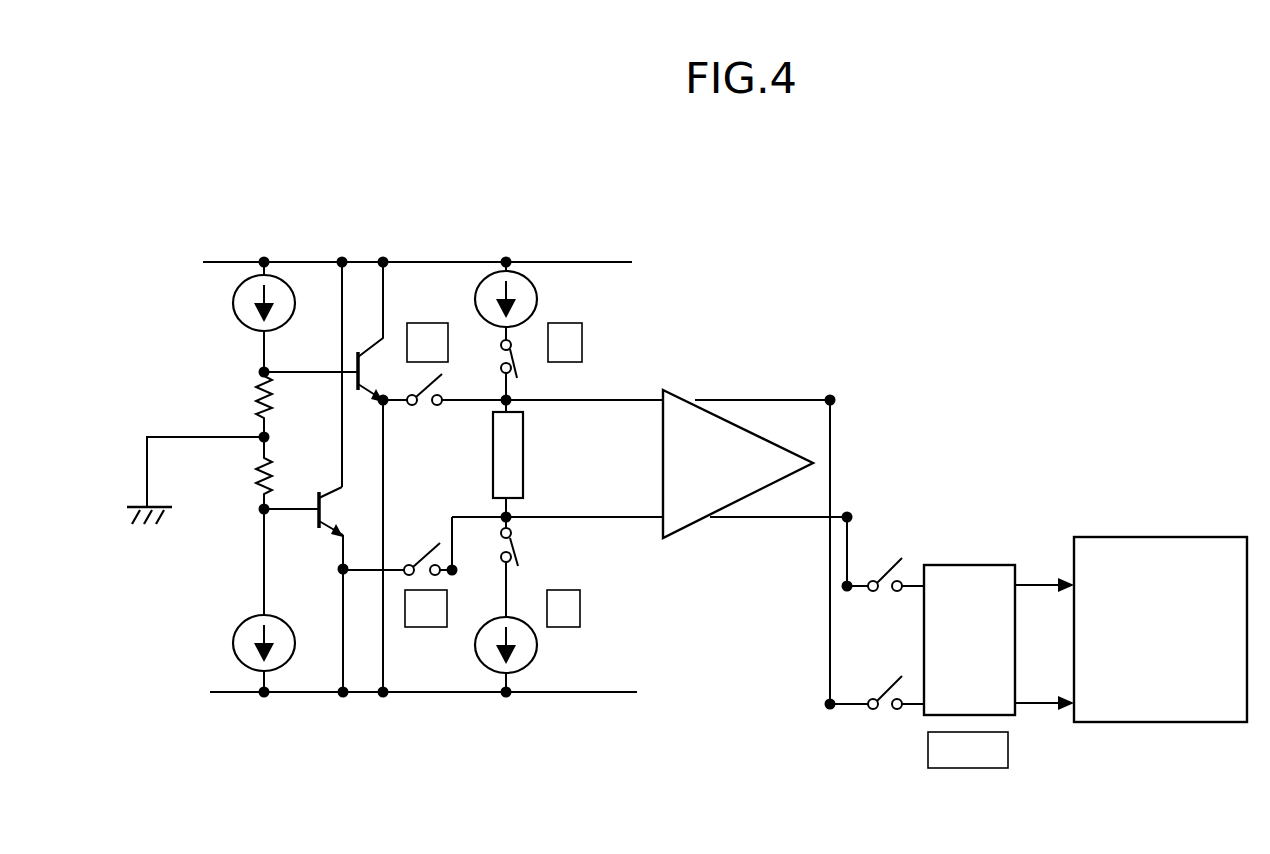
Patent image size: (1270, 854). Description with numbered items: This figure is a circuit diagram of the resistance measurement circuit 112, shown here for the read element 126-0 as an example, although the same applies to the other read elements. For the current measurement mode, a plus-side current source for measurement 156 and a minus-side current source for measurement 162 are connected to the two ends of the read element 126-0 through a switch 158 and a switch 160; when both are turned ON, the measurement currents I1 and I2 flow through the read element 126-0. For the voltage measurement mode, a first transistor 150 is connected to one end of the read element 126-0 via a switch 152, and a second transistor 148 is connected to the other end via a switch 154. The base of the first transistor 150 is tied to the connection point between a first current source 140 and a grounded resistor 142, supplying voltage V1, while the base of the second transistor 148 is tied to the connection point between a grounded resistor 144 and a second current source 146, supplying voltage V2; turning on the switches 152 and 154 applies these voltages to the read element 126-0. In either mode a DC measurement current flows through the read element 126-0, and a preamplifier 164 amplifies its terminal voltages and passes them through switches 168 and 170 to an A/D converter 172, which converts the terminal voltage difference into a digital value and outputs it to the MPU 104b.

The resistance measurement circuit 112 is at (544, 222).
The first current source 140 is at (232, 302).
The grounded resistor 142 is at (257, 392).
The grounded resistor 144 is at (253, 485).
The second current source 146 is at (225, 658).
The second transistor 148 is at (298, 518).
The first transistor 150 is at (338, 382).
The switch 152 is at (427, 410).
The switch 154 is at (412, 550).
The current source for measurement 156 is at (537, 290).
The switch 158 is at (528, 347).
The switch 160 is at (525, 540).
The current source for measurement 162 is at (520, 617).
The preamplifier 164 is at (678, 403).
The switch 168 is at (890, 552).
The switch 170 is at (877, 720).
The A/D converter 172 is at (932, 707).
The read element 126-0 is at (517, 470).
The MPU 104b is at (1115, 710).